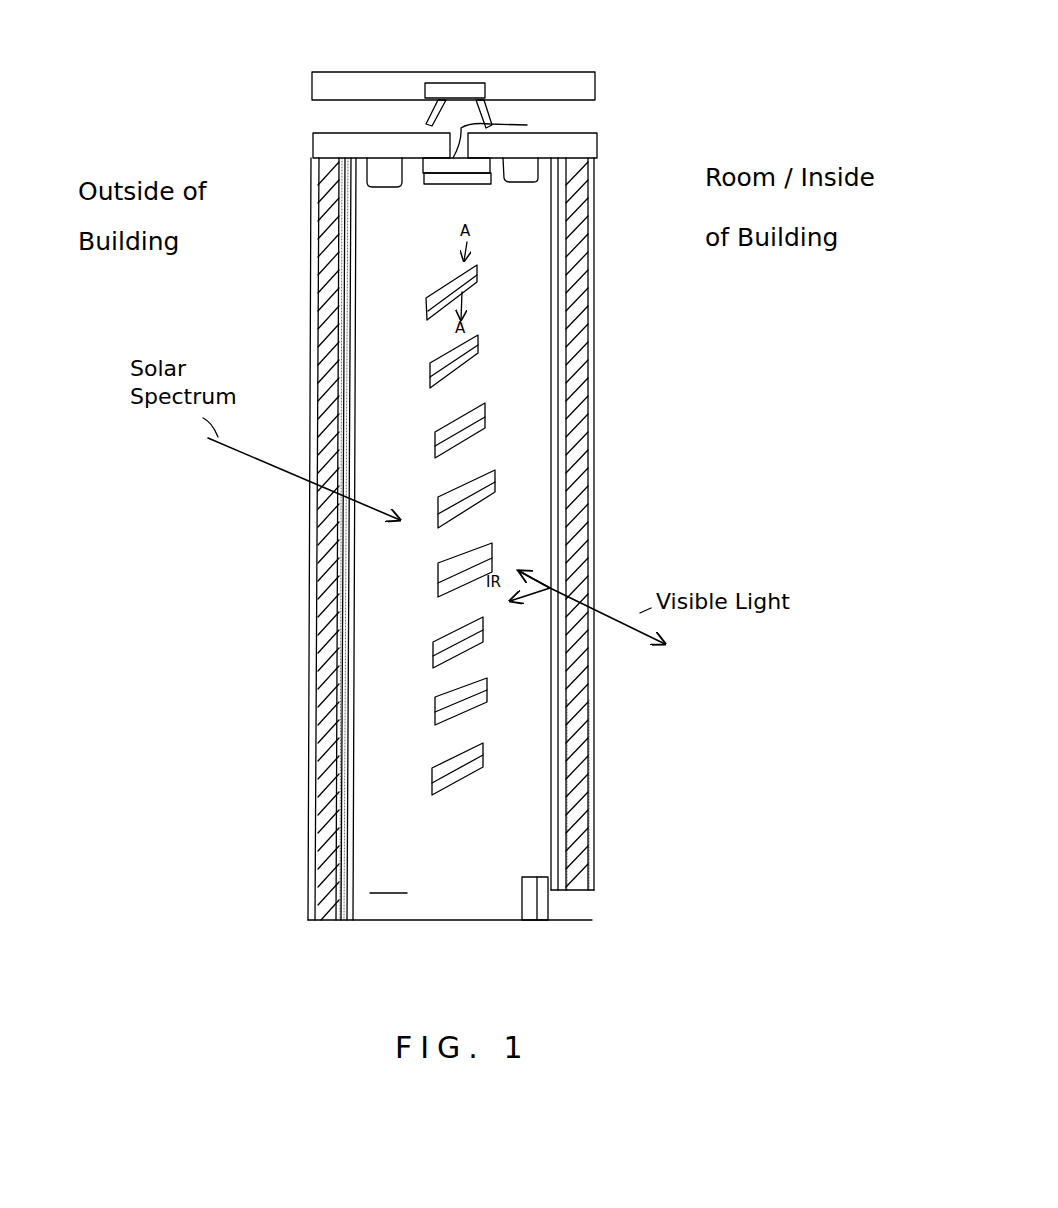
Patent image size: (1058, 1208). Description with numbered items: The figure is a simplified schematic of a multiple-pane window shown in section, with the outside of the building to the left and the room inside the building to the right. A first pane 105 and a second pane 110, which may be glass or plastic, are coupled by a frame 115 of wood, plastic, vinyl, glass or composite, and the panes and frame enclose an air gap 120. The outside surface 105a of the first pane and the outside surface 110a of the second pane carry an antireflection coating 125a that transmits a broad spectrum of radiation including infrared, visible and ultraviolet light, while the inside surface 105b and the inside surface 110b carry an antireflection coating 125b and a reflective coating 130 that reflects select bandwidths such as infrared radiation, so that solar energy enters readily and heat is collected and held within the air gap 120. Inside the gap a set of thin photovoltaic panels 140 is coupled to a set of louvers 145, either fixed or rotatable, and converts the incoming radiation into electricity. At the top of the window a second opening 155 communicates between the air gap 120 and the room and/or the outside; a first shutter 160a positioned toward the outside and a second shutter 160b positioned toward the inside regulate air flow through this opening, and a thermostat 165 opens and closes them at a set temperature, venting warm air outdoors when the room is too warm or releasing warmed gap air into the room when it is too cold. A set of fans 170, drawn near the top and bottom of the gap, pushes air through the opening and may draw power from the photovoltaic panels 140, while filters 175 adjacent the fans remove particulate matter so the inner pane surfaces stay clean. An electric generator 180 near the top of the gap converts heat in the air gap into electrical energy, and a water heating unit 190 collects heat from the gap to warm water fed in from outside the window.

The first pane 105 is at (274, 543).
The outside surface of first pane 105a is at (313, 882).
The inside surface of first pane 105b is at (317, 907).
The second pane 110 is at (613, 524).
The outside surface of second pane 110a is at (585, 828).
The inside surface of second pane 110b is at (570, 855).
The frame 115 is at (556, 72).
The air gap 120 is at (388, 884).
The antireflection coating 125a is at (317, 728).
The antireflection coating 125b is at (342, 745).
The reflective coating 130 is at (348, 778).
The photovoltaic panels 140 is at (497, 747).
The louvers 145 is at (497, 769).
The second opening 155 is at (587, 121).
The first shutter 160a is at (420, 118).
The second shutter 160b is at (497, 110).
The thermostat 165 is at (448, 83).
The fans 170 is at (418, 167).
The filters 175 is at (466, 185).
The electric generator 180 is at (378, 189).
The water heating unit 190 is at (525, 184).